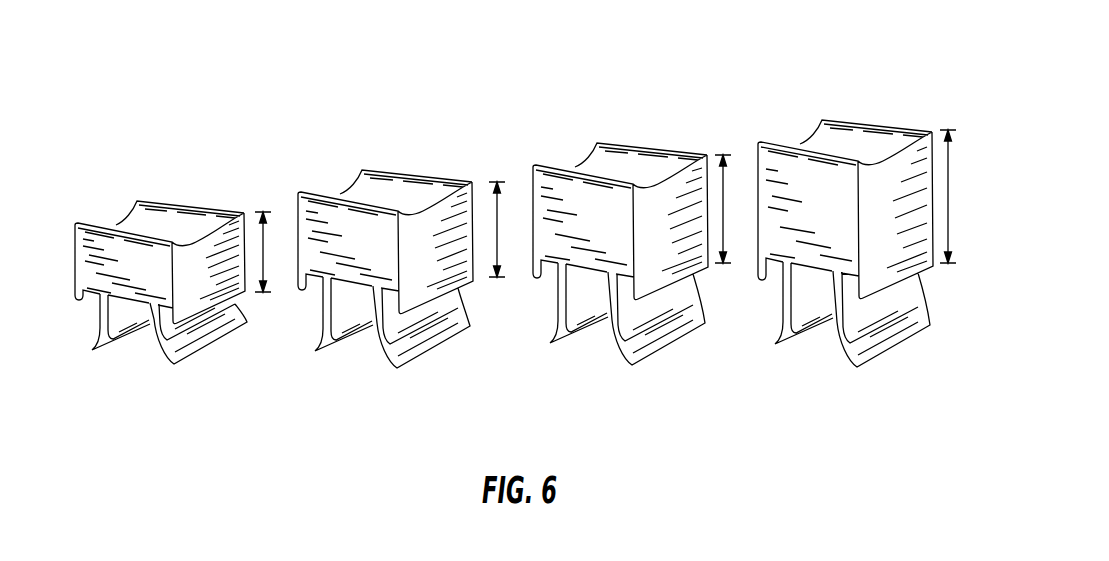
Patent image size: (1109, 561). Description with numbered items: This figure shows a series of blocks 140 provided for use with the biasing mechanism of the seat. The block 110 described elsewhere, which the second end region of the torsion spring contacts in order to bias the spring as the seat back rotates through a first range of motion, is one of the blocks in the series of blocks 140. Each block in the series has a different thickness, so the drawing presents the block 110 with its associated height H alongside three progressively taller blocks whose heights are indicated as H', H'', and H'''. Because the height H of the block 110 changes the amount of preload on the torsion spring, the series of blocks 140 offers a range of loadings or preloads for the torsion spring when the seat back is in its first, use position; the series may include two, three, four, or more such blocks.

The block 110 is at (113, 223).
The series of blocks 140 is at (983, 407).
The height H is at (269, 252).
The height of second clip body H' is at (505, 229).
The height of third clip body H'' is at (737, 209).
The height of fourth clip body H''' is at (963, 196).